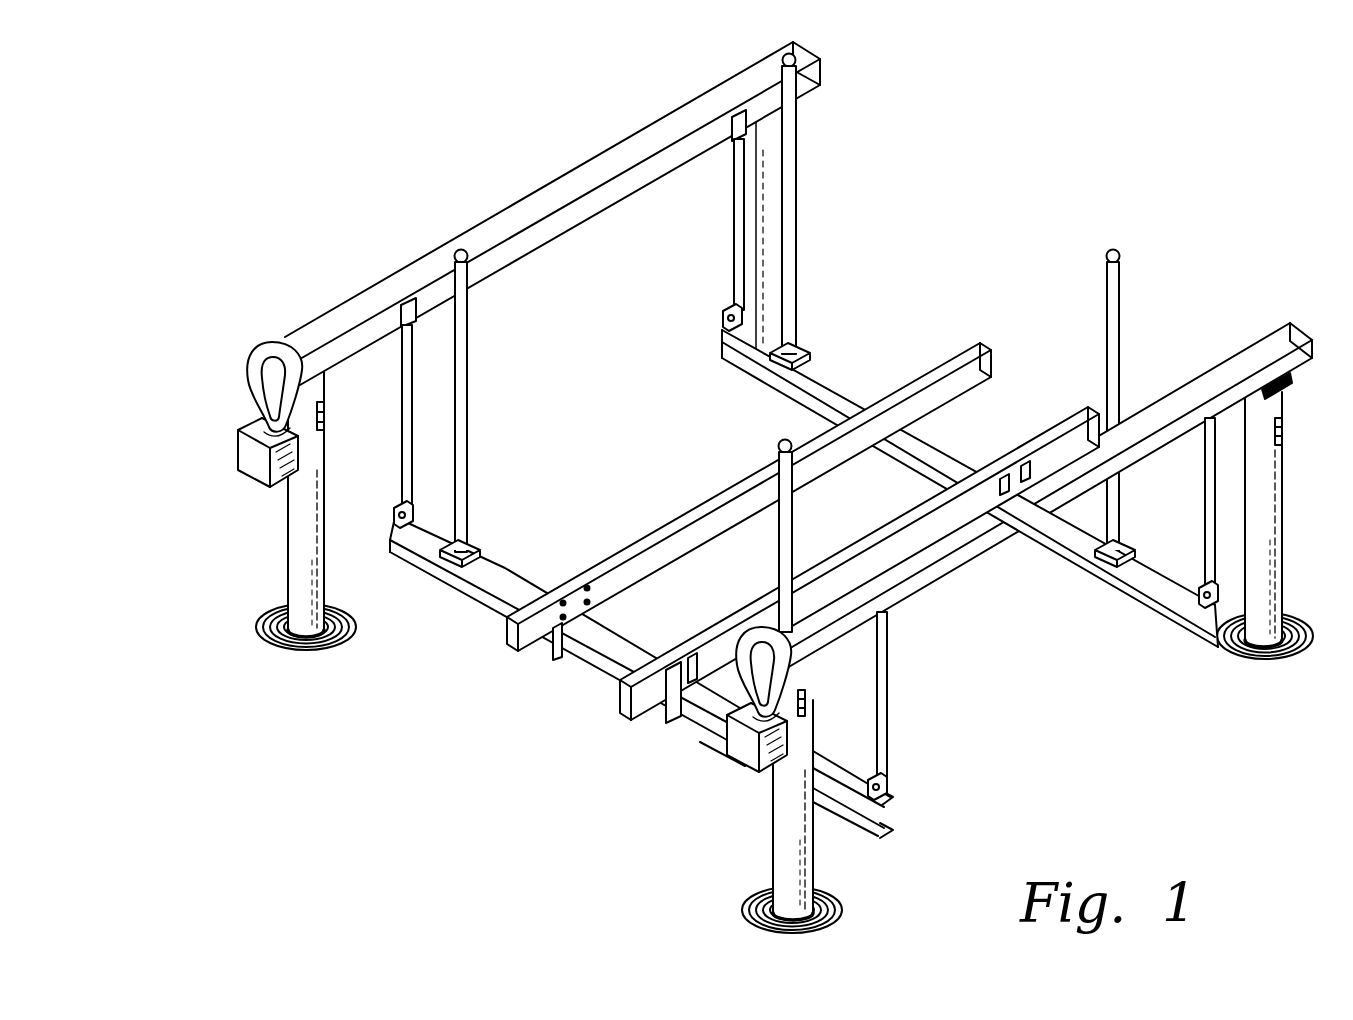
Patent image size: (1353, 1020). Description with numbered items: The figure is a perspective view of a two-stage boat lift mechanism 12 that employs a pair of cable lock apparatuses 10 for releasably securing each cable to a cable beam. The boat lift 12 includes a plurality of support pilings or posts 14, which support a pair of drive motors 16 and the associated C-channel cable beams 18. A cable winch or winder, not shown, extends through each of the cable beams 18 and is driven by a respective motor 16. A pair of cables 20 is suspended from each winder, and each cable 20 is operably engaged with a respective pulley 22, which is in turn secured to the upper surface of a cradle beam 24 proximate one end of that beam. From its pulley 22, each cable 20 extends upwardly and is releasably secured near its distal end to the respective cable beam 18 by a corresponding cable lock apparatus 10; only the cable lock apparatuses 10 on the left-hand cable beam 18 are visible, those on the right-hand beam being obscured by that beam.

The cable lock apparatus 10 is at (733, 112).
The two-stage boat lift mechanism 12 is at (760, 487).
The support pilings or posts 14 is at (780, 235).
The drive motor 16 is at (243, 461).
The C-channel cable beam 18 is at (632, 152).
The cable 20 is at (734, 225).
The pulley 22 is at (722, 318).
The cradle beam 24 is at (472, 606).